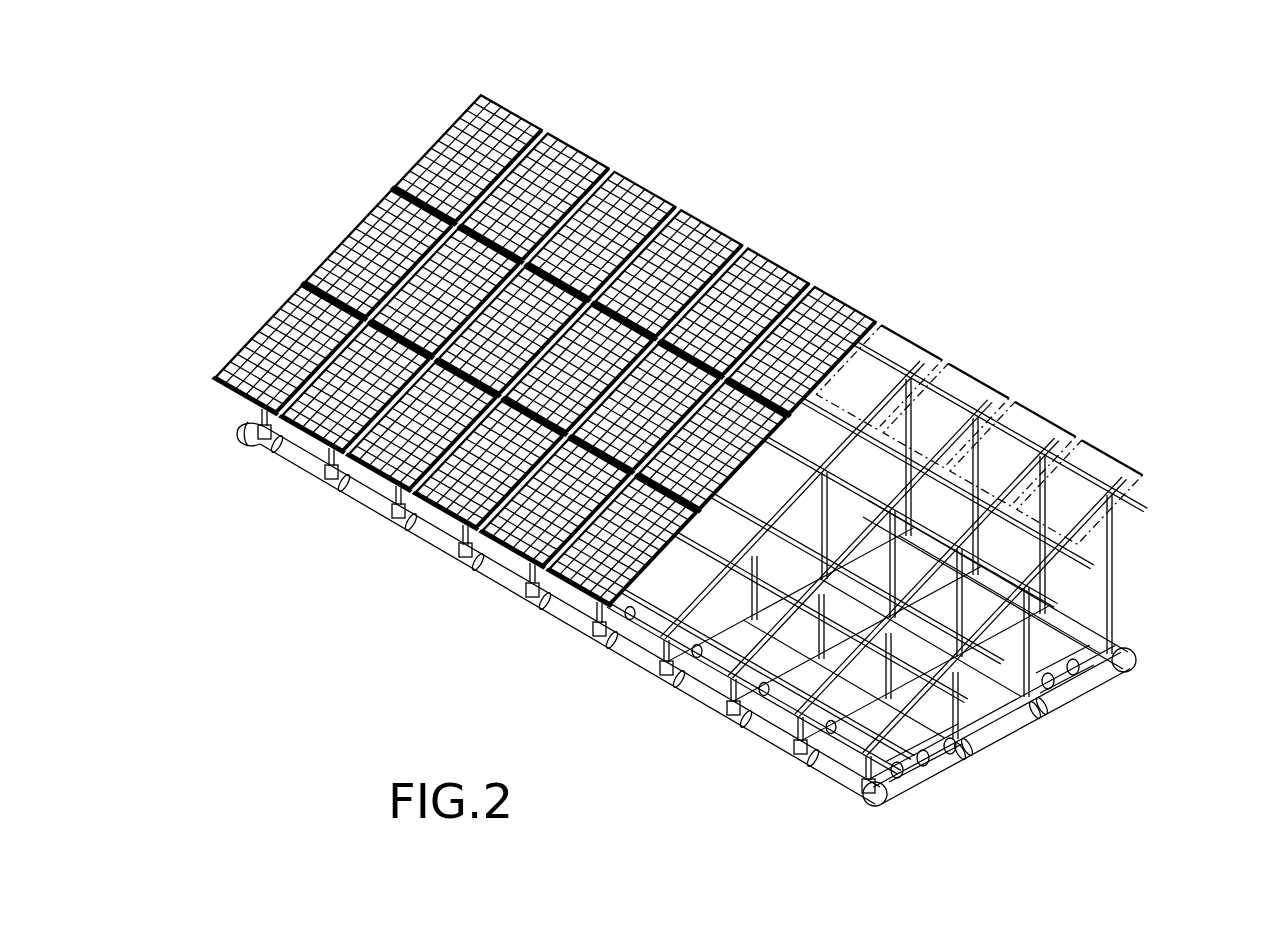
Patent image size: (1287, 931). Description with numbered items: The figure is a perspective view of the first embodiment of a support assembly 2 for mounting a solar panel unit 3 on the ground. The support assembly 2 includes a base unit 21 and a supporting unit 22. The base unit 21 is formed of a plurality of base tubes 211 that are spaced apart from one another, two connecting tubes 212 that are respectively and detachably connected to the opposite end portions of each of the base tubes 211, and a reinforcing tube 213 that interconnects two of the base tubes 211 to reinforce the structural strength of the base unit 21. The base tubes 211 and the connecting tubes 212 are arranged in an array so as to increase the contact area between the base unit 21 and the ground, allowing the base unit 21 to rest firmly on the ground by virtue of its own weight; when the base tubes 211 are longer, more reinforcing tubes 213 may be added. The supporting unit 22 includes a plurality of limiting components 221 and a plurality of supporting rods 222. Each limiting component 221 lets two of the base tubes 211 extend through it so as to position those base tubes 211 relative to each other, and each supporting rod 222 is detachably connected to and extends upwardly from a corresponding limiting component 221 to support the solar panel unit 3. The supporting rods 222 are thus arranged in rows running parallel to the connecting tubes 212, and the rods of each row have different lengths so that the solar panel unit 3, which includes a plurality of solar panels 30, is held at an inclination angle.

The support assembly 2 is at (413, 586).
The base unit 21 is at (1040, 750).
The base tube 211 is at (565, 612).
The connecting tube 212 is at (235, 408).
The reinforcing tube 213 is at (665, 630).
The supporting unit 22 is at (1128, 586).
The limiting component 221 is at (797, 757).
The supporting rod 222 is at (848, 760).
The solar panel unit 3 is at (352, 203).
The solar panel 30 is at (447, 137).